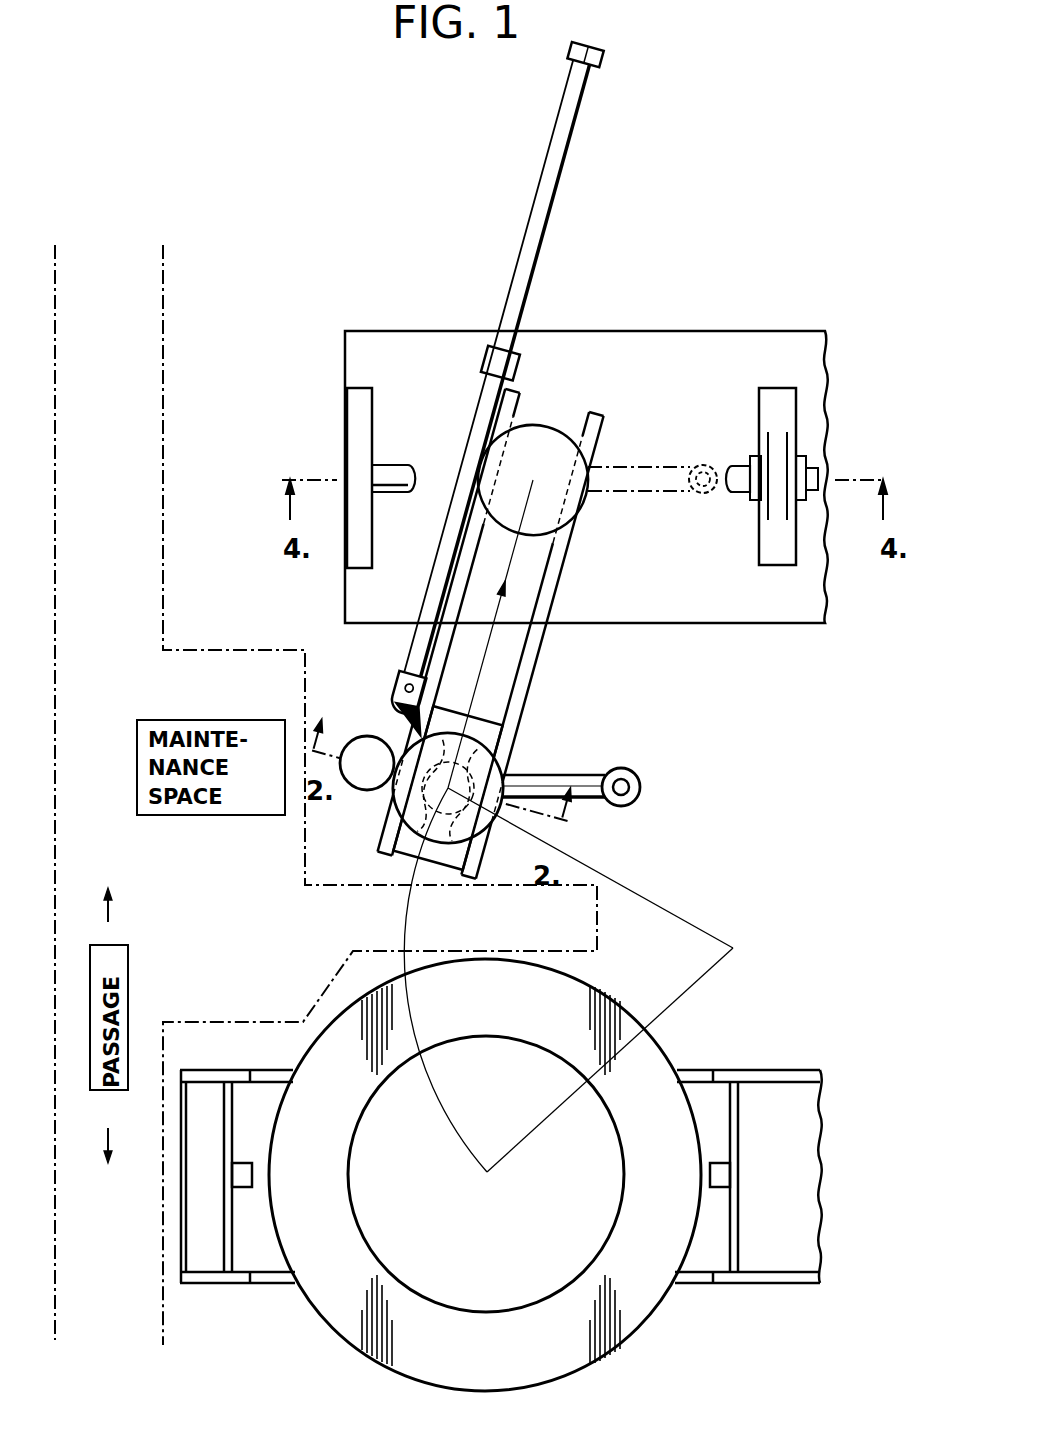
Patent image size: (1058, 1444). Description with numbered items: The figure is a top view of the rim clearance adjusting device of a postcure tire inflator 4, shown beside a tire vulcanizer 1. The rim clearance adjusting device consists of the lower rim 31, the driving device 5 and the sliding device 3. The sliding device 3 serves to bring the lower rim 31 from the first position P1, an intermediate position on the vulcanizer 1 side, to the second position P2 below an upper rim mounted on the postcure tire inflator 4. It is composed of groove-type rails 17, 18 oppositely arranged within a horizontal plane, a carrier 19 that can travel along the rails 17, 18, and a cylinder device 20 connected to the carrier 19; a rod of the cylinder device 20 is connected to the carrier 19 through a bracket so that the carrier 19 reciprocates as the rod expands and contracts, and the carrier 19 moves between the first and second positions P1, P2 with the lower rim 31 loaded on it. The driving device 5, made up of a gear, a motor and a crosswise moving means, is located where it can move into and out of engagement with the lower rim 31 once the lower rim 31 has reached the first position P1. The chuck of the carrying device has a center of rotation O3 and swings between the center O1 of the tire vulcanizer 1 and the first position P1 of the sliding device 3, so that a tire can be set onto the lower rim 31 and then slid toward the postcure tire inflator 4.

The tire vulcanizer 1 is at (536, 1175).
The sliding device 3 is at (540, 648).
The postcure tire inflator 4 is at (833, 378).
The driving device 5 is at (376, 782).
The groove-type rail 17 is at (530, 691).
The groove-type rail 18 is at (420, 676).
The carrier 19 is at (486, 722).
The cylinder device 20 is at (538, 200).
The lower rim 31 is at (518, 779).
The first position P1 is at (448, 788).
The second position P2 is at (533, 480).
The center of the tire vulcanizer O1 is at (487, 1172).
The center of rotation of the chuck O3 is at (733, 948).